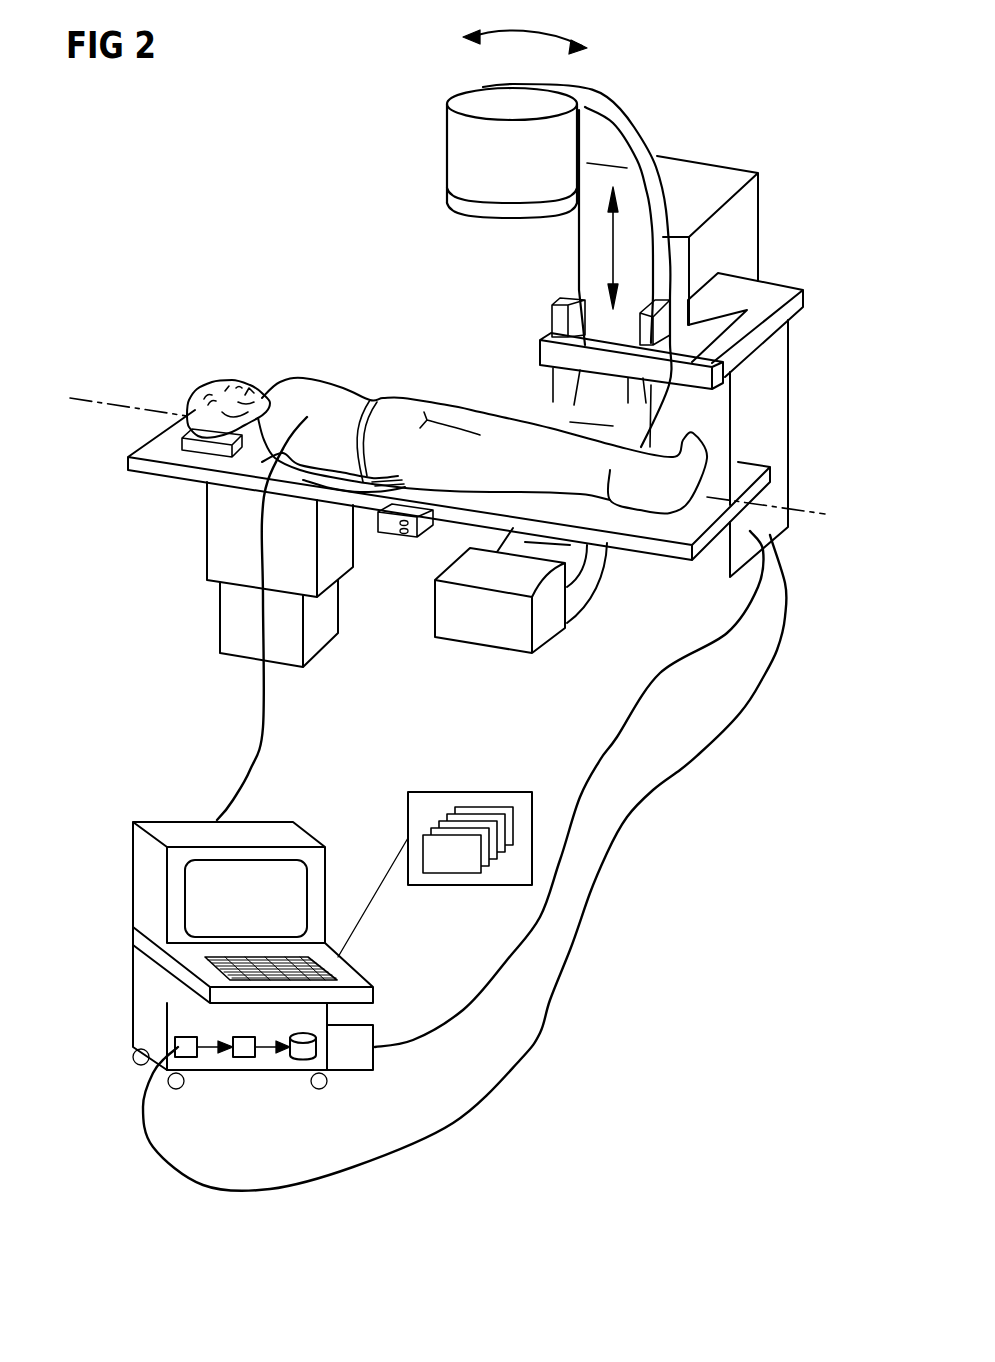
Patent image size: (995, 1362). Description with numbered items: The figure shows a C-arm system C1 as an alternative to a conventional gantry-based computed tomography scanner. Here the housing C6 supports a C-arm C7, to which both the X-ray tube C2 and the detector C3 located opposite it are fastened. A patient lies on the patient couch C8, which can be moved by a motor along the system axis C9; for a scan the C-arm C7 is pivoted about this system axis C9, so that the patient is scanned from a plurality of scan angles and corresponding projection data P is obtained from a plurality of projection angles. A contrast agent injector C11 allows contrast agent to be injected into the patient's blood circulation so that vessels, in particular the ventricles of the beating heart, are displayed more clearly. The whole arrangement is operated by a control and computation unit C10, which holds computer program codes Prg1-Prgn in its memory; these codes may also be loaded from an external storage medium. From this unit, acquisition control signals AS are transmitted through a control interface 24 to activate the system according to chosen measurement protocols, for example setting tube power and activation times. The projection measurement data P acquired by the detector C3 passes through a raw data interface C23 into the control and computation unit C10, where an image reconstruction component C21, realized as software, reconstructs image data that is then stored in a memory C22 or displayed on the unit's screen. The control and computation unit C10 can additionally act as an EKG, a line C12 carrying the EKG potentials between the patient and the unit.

The C-arm system C1 is at (238, 260).
The X-ray tube C2 is at (453, 148).
The detector C3 is at (550, 626).
The housing C6 is at (750, 203).
The C-arm C7 is at (630, 123).
The patient couch C8 is at (152, 467).
The system axis C9 is at (117, 398).
The control and computation unit C10 is at (232, 990).
The contrast agent injector C11 is at (390, 533).
The line C12 is at (265, 727).
The acquisition control signals AS is at (607, 733).
The projection measurement data P is at (628, 818).
The image reconstruction component C21 is at (247, 1055).
The memory C22 is at (300, 1057).
The raw data interface C23 is at (187, 1058).
The control interface 24 is at (350, 1062).
The computer program codes Prg1-Prgn is at (452, 874).